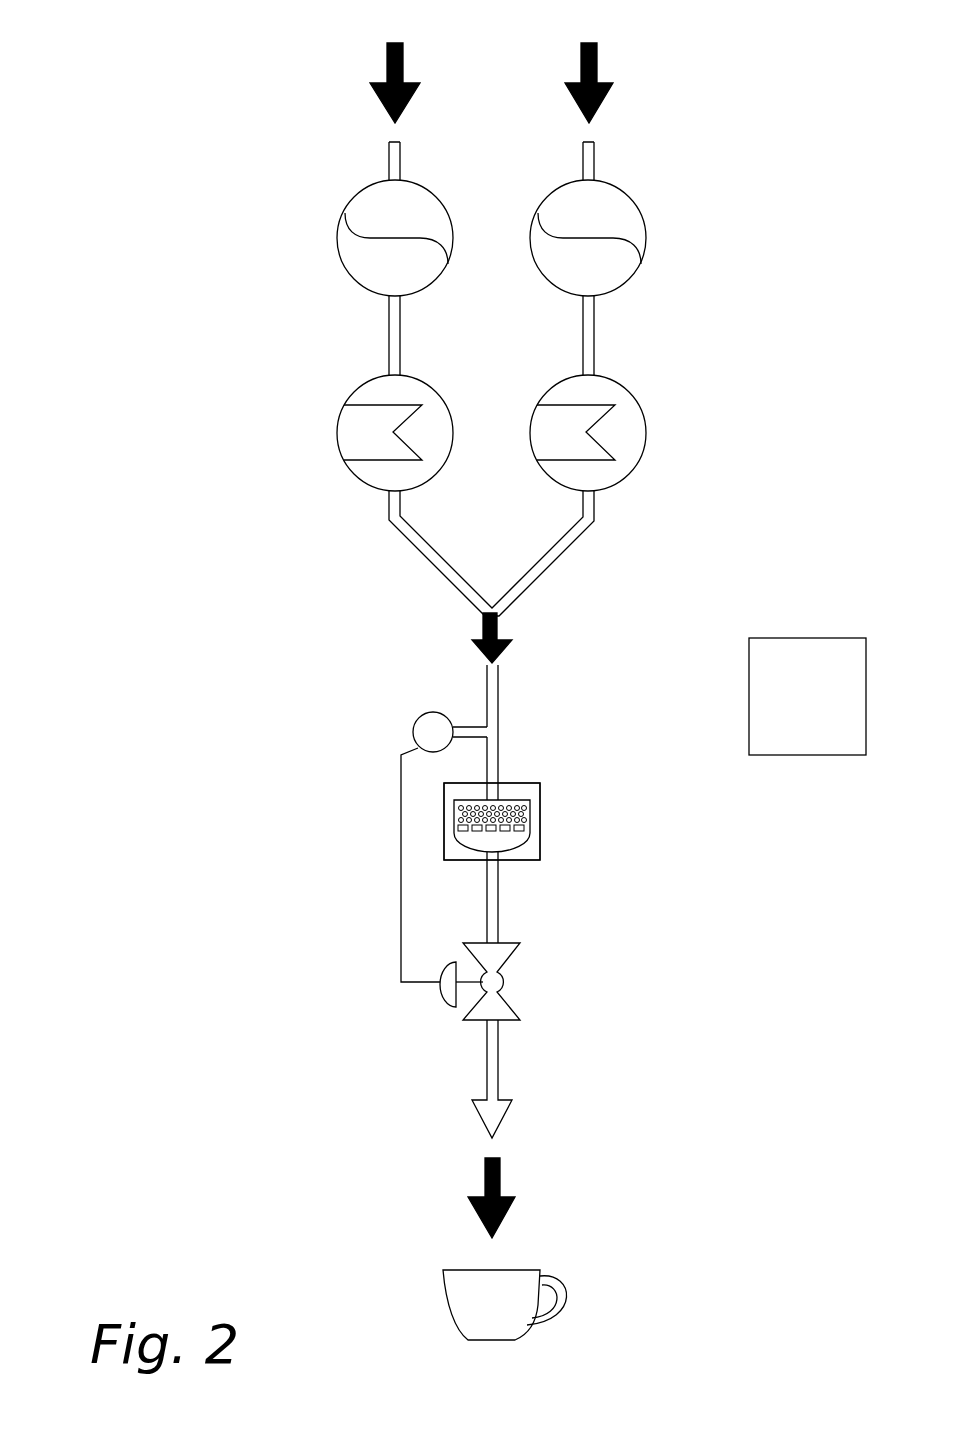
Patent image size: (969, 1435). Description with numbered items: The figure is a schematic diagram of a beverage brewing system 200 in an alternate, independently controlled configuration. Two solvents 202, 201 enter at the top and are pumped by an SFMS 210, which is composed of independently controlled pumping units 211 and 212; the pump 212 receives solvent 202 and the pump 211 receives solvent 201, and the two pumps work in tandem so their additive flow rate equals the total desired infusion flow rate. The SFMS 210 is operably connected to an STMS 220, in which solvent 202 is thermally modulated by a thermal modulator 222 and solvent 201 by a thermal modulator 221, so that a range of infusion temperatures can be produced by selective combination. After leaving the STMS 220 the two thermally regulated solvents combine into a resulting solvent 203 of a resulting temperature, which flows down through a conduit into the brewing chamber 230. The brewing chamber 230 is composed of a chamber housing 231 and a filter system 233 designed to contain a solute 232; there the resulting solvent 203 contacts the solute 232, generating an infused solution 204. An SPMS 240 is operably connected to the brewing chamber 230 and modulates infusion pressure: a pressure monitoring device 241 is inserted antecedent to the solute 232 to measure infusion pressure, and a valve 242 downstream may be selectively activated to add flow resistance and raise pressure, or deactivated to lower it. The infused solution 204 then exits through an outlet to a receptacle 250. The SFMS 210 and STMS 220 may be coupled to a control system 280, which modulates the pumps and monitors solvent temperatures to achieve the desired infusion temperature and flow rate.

The beverage brewing system 200 is at (200, 620).
The solvent 201 is at (597, 60).
The solvent 202 is at (383, 80).
The resulting solvent 203 is at (505, 640).
The infused solution 204 is at (500, 1163).
The SFMS 210 is at (529, 204).
The pump 211 is at (647, 228).
The pump 212 is at (360, 195).
The STMS 220 is at (531, 404).
The thermal modulator 221 is at (647, 423).
The thermal modulator 222 is at (353, 398).
The brewing chamber 230 is at (438, 882).
The chamber housing 231 is at (540, 840).
The solute 232 is at (528, 805).
The filter system 233 is at (465, 826).
The SPMS 240 is at (393, 725).
The pressure monitoring device 241 is at (420, 712).
The valve 242 is at (463, 1022).
The receptacle 250 is at (622, 1283).
The control system 280 is at (833, 712).